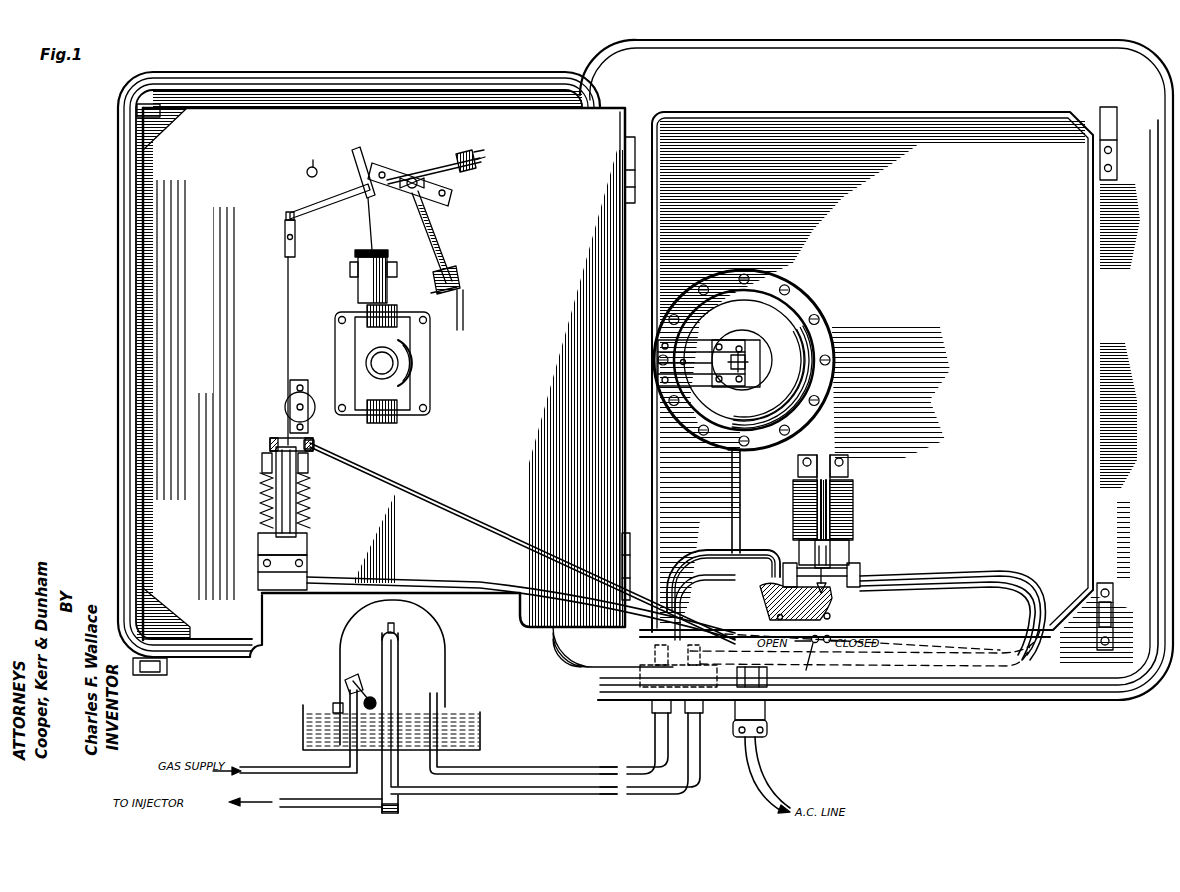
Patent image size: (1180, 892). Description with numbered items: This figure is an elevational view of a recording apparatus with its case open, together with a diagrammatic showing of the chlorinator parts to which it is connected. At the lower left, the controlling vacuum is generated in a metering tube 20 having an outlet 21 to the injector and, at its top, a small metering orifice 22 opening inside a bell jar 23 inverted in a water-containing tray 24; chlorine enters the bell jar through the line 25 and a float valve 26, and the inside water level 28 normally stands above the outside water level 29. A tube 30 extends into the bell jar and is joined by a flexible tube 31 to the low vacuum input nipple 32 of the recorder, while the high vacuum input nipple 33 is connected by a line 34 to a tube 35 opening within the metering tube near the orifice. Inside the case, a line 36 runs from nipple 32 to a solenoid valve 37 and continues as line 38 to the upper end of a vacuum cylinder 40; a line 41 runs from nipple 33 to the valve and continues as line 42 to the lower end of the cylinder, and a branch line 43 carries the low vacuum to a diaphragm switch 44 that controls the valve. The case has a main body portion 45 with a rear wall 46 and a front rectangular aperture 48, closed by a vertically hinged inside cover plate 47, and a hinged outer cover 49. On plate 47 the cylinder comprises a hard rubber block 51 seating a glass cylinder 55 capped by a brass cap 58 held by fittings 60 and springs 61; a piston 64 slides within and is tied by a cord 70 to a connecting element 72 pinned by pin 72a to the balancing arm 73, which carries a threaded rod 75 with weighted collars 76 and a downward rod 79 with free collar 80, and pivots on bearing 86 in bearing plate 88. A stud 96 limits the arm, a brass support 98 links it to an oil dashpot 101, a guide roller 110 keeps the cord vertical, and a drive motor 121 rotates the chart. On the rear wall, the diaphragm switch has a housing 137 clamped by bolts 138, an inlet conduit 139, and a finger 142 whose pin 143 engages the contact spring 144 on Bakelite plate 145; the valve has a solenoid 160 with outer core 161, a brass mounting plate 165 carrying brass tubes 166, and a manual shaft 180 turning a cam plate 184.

The metering tube 20 is at (400, 672).
The outlet 21 is at (302, 799).
The metering orifice 22 is at (394, 624).
The bell jar 23 is at (446, 680).
The water-containing tray 24 is at (306, 733).
The line 25 is at (293, 768).
The float valve 26 is at (347, 687).
The inside water level 28 is at (343, 698).
The outside water level 29 is at (317, 722).
The tube 30 is at (438, 700).
The flexible tube 31 is at (640, 770).
The low vacuum input nipple 32 is at (703, 713).
The high vacuum input nipple 33 is at (652, 705).
The line 34 is at (655, 730).
The tube 35 is at (393, 653).
The line 36 is at (700, 552).
The solenoid valve 37 is at (851, 465).
The line 38 is at (443, 502).
The vacuum cylinder 40 is at (296, 546).
The line 41 is at (705, 579).
The line 42 is at (427, 577).
The branch line 43 is at (732, 503).
The diaphragm switch 44 is at (805, 286).
The main body portion 45 is at (1133, 690).
The rear wall 46 is at (1027, 140).
The inside cover plate 47 is at (617, 107).
The front rectangular aperture 48 is at (1090, 258).
The outer cover 49 is at (283, 78).
The hard rubber block 51 is at (308, 553).
The glass cylinder 55 is at (300, 496).
The brass cap 58 is at (272, 444).
The brass fittings 60 is at (262, 466).
The tensioned stainless steel springs 61 is at (262, 492).
The piston 64 is at (262, 518).
The cord 70 is at (287, 358).
The metal connecting element 72 is at (285, 221).
The pin 72a is at (290, 212).
The balancing arm 73 is at (327, 206).
The threaded rod 75 is at (445, 165).
The weighted collars 76 is at (478, 153).
The threaded aluminum rod 79 is at (437, 238).
The free collar 80 is at (458, 282).
The hardened steel bearing 86 is at (412, 178).
The bearing plate 88 is at (451, 200).
The stud 96 is at (304, 156).
The upstanding brass support 98 is at (358, 152).
The oil dashpot 101 is at (357, 285).
The guide roller 110 is at (310, 402).
The drive motor 121 is at (405, 382).
The dish-shaped housing 137 is at (783, 322).
The bolts 138 is at (783, 285).
The inlet conduit 139 is at (734, 458).
The finger 142 is at (757, 362).
The transverse pin 143 is at (750, 355).
The contact spring 144 is at (698, 368).
The Bakelite plate 145 is at (697, 340).
The solenoid 160 is at (855, 507).
The laminated outer core structure 161 is at (806, 670).
The brass mounting plate 165 is at (765, 607).
The brass tubes 166 is at (784, 586).
The shaft 180 is at (830, 642).
The cam plate 184 is at (827, 593).